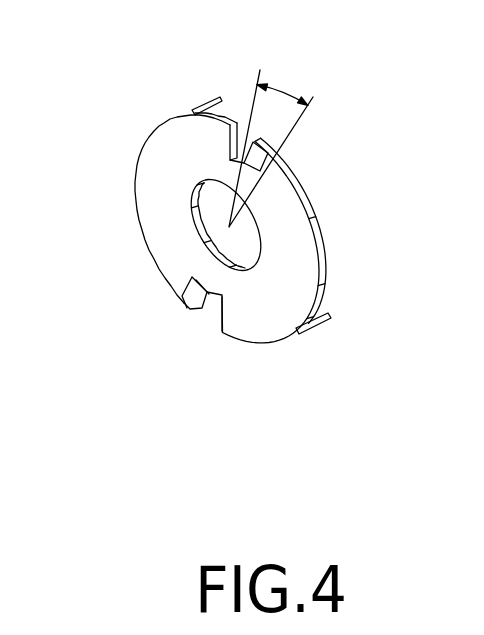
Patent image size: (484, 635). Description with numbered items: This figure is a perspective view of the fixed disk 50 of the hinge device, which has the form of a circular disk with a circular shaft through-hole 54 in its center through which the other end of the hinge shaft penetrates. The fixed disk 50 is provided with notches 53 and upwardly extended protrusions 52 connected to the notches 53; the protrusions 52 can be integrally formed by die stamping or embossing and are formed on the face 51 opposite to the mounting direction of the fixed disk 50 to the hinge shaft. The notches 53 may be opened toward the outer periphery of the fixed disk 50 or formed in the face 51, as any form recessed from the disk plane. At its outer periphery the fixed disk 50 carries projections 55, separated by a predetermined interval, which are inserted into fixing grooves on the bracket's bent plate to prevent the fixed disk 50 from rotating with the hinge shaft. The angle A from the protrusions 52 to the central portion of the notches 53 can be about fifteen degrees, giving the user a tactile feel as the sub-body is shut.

The fixed disk 50 is at (338, 180).
The face 51 is at (157, 180).
The protrusion 52 is at (188, 310).
The notch 53 is at (214, 306).
The shaft through-hole 54 is at (192, 277).
The projection 55 is at (211, 102).